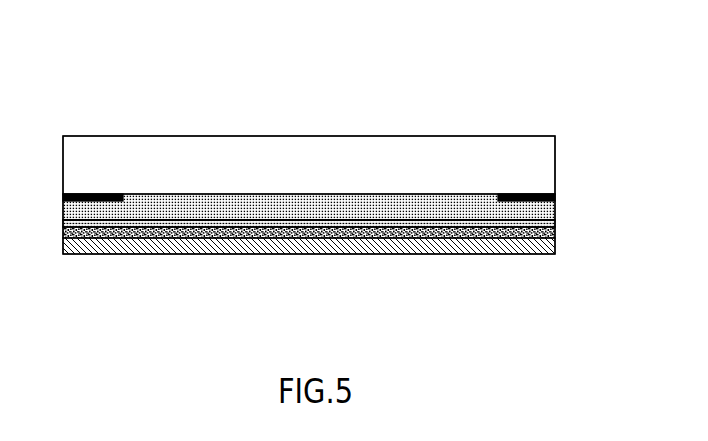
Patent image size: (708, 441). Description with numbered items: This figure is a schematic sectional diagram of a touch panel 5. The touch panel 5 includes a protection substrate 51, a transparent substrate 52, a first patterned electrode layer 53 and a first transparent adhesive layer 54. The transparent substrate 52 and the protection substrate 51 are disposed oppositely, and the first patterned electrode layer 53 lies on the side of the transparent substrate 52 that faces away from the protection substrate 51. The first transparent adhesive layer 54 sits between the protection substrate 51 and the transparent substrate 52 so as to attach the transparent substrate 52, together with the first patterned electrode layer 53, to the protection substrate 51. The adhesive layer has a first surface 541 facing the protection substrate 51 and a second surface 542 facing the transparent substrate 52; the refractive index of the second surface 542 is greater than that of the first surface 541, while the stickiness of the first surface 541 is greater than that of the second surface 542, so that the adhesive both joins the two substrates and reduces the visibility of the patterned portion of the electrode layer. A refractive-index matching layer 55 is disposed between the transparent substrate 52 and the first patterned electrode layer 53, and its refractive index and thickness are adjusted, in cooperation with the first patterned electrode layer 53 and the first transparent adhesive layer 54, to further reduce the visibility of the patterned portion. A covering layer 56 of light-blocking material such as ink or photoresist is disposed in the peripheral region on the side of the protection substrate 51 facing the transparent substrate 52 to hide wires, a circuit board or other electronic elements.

The touch panel 5 is at (207, 44).
The protection substrate 51 is at (550, 153).
The transparent substrate 52 is at (63, 225).
The first patterned electrode layer 53 is at (555, 247).
The first transparent adhesive layer 54 is at (357, 212).
The first surface 541 is at (555, 198).
The second surface 542 is at (555, 226).
The refractive-index matching layer 55 is at (63, 231).
The covering layer 56 is at (93, 194).